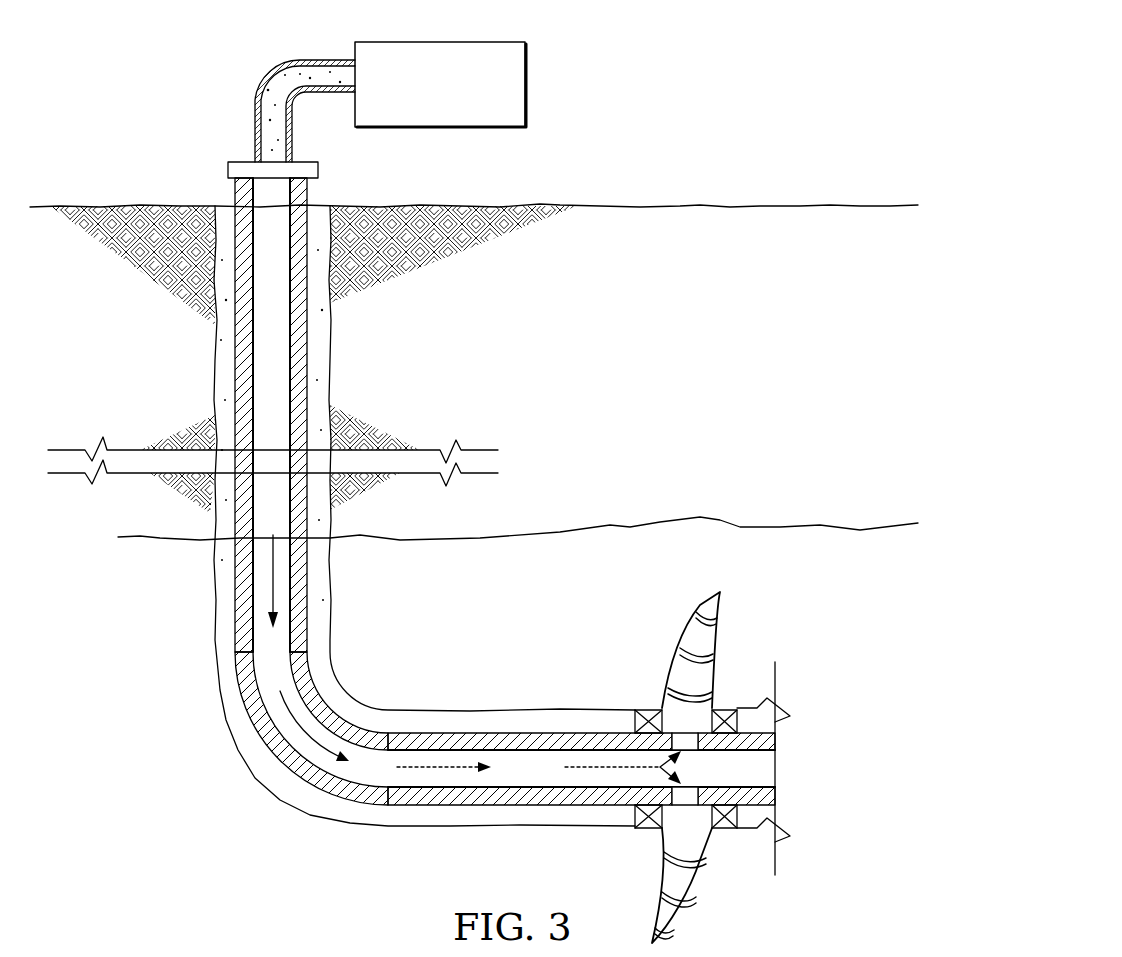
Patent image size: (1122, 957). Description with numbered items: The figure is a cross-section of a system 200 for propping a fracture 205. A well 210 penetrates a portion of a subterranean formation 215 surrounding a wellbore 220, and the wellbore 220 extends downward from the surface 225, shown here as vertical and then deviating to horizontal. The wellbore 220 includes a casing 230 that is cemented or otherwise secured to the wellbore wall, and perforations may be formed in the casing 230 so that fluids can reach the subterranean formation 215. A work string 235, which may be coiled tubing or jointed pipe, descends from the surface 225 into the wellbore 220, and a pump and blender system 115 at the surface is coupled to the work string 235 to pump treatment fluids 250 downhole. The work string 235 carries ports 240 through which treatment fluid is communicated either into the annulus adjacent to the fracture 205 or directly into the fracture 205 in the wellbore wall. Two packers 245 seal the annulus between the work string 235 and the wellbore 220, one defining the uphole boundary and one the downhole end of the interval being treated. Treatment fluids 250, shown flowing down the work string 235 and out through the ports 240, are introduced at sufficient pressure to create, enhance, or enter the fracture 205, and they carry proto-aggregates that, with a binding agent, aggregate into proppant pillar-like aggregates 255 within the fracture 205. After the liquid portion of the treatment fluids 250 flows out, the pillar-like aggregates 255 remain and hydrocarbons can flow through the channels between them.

The system for propping a fracture 200 is at (792, 86).
The pump and blender system 115 is at (419, 98).
The surface 225 is at (636, 206).
The subterranean formation 215 is at (638, 527).
The wellbore 220 is at (223, 346).
The casing 230 is at (311, 352).
The work string 235 is at (243, 648).
The well 210 is at (222, 792).
The ports 240 is at (688, 752).
The packers 245 is at (744, 830).
The fracture 205 is at (712, 645).
The proppant pillar-like aggregates 255 is at (695, 650).
The treatment fluids 250 is at (272, 582).